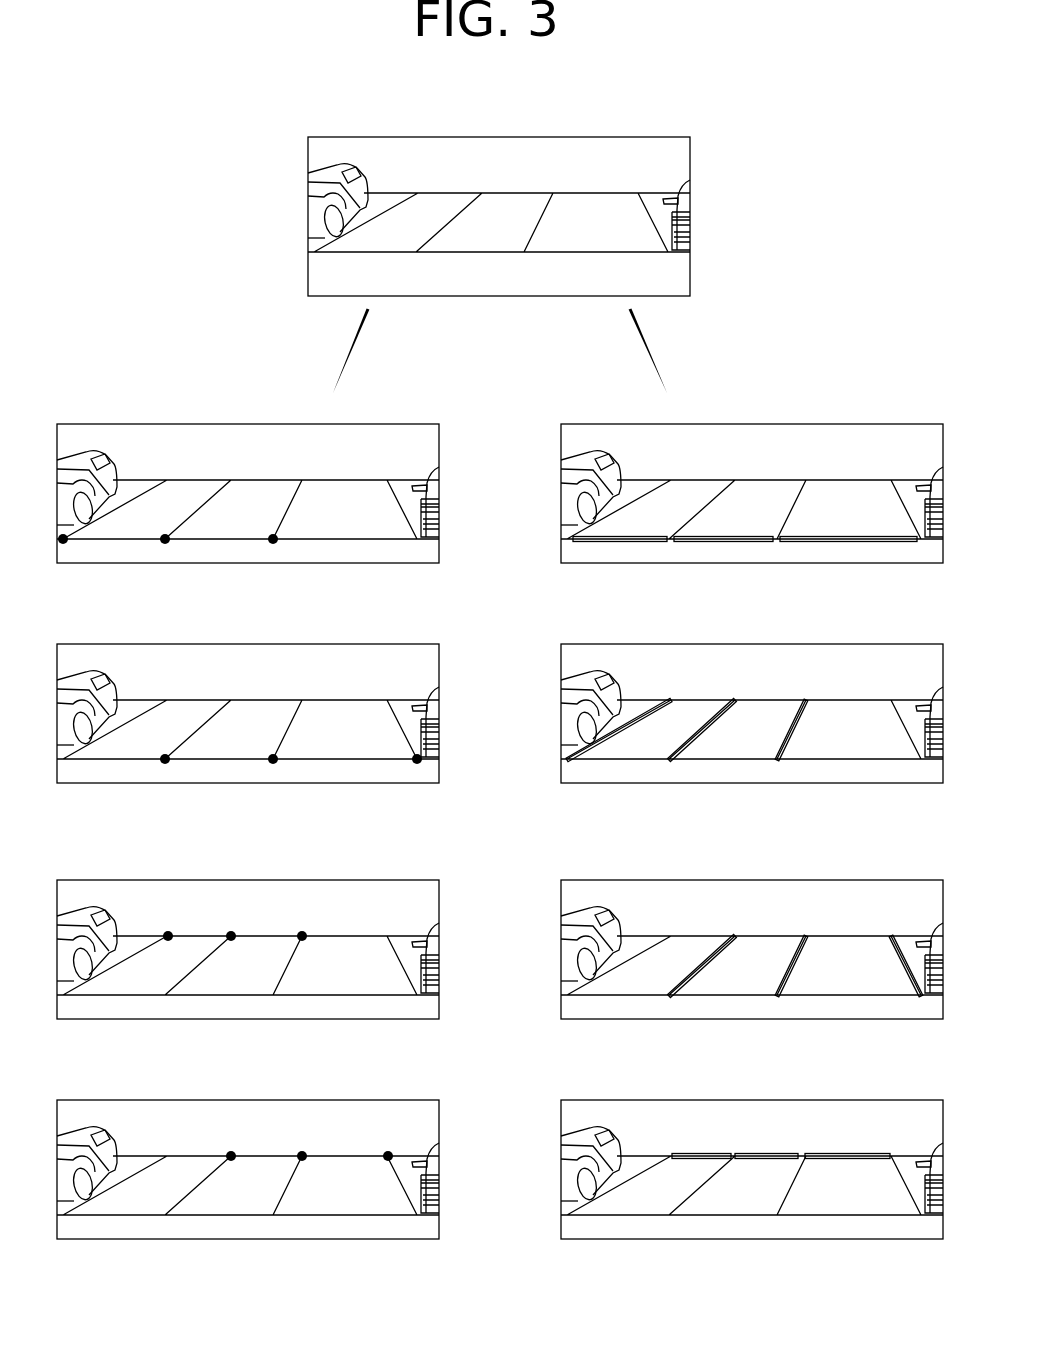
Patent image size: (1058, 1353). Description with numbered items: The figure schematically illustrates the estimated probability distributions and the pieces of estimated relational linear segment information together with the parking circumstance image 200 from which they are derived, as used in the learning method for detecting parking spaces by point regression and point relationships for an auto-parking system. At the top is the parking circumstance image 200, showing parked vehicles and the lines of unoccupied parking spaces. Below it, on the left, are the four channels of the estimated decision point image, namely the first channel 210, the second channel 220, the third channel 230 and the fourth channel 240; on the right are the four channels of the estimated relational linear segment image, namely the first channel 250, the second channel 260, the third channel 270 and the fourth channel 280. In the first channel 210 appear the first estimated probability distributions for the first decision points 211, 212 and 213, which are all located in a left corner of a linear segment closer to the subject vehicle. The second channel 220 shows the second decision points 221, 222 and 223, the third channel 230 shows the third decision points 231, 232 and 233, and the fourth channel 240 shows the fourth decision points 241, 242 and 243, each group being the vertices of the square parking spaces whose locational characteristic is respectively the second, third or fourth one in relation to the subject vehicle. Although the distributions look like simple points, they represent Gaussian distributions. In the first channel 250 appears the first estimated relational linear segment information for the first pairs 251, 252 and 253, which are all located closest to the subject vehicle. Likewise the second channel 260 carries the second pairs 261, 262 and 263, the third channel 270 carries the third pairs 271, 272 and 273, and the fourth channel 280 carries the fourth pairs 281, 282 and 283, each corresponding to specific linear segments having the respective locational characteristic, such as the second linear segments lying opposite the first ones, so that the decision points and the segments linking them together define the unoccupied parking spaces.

The parking circumstance image 200 is at (691, 161).
The first channel of the estimated decision point image 210 is at (397, 424).
The first decision point 211 is at (63, 541).
The first decision point 212 is at (165, 541).
The first decision point 213 is at (273, 541).
The second channel of the estimated decision point image 220 is at (397, 644).
The second decision point 221 is at (165, 761).
The second decision point 222 is at (273, 761).
The second decision point 223 is at (417, 761).
The third channel of the estimated decision point image 230 is at (397, 880).
The third decision point 231 is at (167, 931).
The third decision point 232 is at (229, 931).
The third decision point 233 is at (300, 931).
The fourth channel of the estimated decision point image 240 is at (397, 1100).
The fourth decision point 241 is at (229, 1151).
The fourth decision point 242 is at (300, 1151).
The fourth decision point 243 is at (386, 1151).
The first channel of the estimated relational linear segment image 250 is at (603, 424).
The first pair 251 is at (617, 543).
The first pair 252 is at (717, 543).
The first pair 253 is at (828, 543).
The second channel of the estimated relational linear segment image 260 is at (603, 644).
The second pair 261 is at (645, 707).
The second pair 262 is at (717, 707).
The second pair 263 is at (793, 707).
The third channel of the estimated relational linear segment image 270 is at (603, 880).
The third pair 271 is at (718, 935).
The third pair 272 is at (797, 935).
The third pair 273 is at (888, 935).
The fourth channel of the estimated relational linear segment image 280 is at (603, 1100).
The fourth pair 281 is at (697, 1152).
The fourth pair 282 is at (763, 1152).
The fourth pair 283 is at (840, 1152).